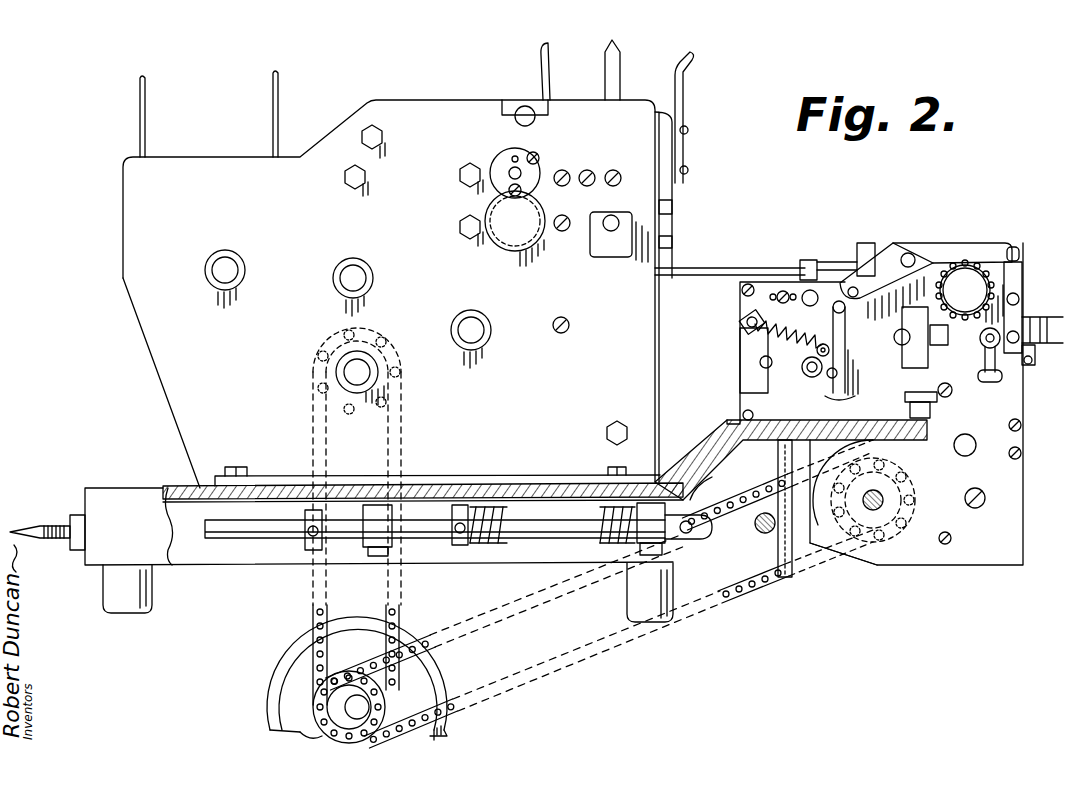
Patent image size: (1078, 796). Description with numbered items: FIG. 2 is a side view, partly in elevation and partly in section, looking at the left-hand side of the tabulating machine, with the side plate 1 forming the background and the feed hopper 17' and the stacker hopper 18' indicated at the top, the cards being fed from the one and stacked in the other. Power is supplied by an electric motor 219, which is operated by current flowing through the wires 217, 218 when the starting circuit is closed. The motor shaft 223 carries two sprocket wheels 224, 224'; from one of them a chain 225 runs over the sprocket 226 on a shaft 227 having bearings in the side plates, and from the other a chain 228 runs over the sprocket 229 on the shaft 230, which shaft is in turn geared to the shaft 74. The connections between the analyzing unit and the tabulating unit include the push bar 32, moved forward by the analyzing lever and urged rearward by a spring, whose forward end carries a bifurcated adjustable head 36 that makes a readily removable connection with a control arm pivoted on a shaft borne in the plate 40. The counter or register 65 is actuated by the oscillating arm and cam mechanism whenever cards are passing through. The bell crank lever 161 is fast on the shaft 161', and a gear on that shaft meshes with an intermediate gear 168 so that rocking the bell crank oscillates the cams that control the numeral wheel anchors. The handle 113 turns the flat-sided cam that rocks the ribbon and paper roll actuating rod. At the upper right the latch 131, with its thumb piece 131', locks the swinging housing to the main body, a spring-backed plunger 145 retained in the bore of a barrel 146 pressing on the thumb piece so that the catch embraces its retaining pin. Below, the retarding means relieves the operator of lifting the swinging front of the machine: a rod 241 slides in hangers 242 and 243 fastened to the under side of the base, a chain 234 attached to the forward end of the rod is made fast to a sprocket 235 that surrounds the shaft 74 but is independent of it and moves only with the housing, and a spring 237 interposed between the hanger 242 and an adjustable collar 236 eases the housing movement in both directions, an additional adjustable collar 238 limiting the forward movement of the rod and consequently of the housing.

The side plate 1 is at (455, 113).
The stacker hopper 18' is at (208, 88).
The feed hopper 17' is at (660, 51).
The counter or register 65 is at (605, 247).
The shaft 227 is at (357, 372).
The sprocket 226 is at (330, 387).
The push bar 32 is at (714, 273).
The bifurcated adjustable head 36 is at (803, 268).
The plate 40 is at (827, 285).
The latch 131 is at (952, 269).
The thumb piece 131' is at (1014, 236).
The plunger 145 is at (1040, 274).
The barrel 146 is at (1022, 313).
The handle 113 is at (985, 354).
The intermediate gear 168 is at (805, 370).
The bell crank lever 161 is at (870, 352).
The shaft 161' is at (866, 356).
The rod 241 is at (258, 537).
The wire 218 is at (40, 515).
The wire 217 is at (35, 550).
The adjustable collar 238 is at (305, 550).
The hanger 242 is at (382, 510).
The adjustable collar 236 is at (462, 546).
The spring 237 is at (503, 510).
The sprocket 229 is at (747, 525).
The hanger 243 is at (839, 404).
The chain 228 is at (795, 566).
The chain 234 is at (838, 473).
The shaft 74 is at (883, 500).
The shaft 230 is at (764, 535).
The sprocket 235 is at (866, 547).
The electric motor 219 is at (418, 686).
The motor shaft 223 is at (352, 709).
The chain 225 is at (315, 626).
The sprocket wheel 224' is at (409, 660).
The sprocket wheel 224 is at (438, 723).